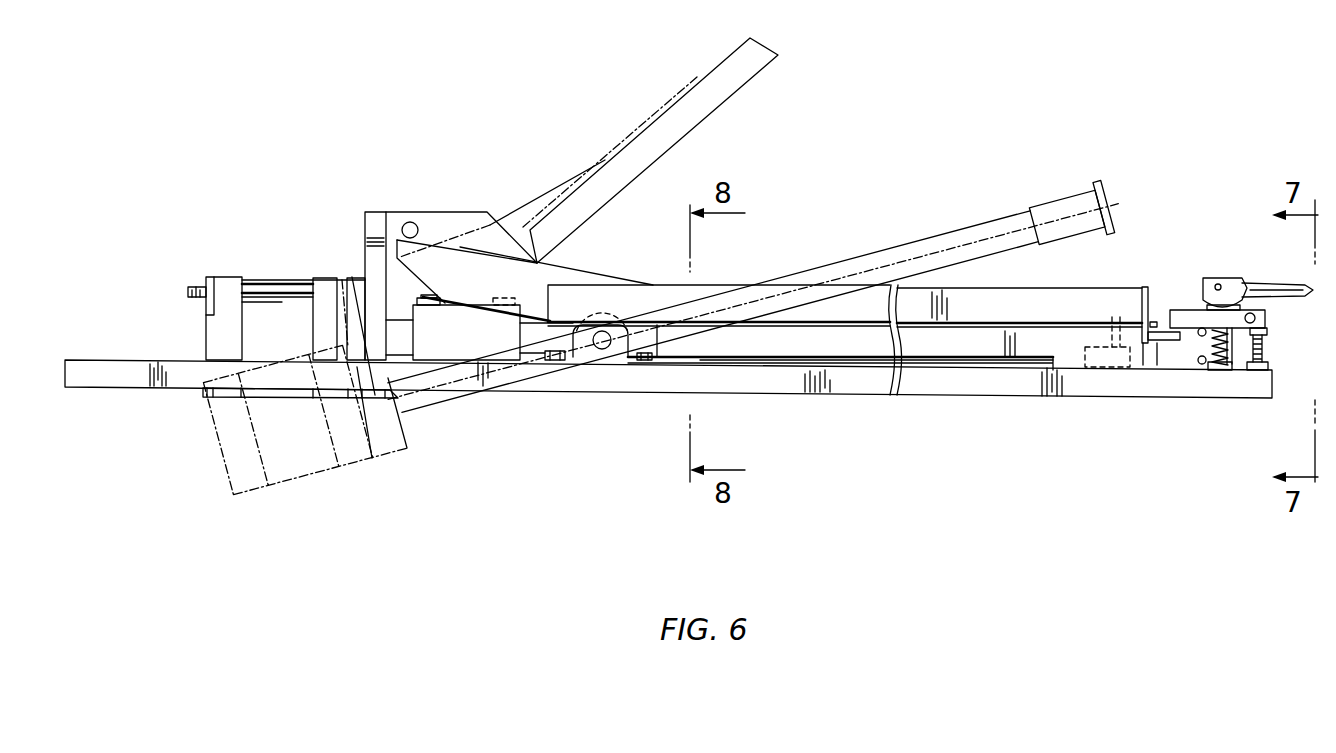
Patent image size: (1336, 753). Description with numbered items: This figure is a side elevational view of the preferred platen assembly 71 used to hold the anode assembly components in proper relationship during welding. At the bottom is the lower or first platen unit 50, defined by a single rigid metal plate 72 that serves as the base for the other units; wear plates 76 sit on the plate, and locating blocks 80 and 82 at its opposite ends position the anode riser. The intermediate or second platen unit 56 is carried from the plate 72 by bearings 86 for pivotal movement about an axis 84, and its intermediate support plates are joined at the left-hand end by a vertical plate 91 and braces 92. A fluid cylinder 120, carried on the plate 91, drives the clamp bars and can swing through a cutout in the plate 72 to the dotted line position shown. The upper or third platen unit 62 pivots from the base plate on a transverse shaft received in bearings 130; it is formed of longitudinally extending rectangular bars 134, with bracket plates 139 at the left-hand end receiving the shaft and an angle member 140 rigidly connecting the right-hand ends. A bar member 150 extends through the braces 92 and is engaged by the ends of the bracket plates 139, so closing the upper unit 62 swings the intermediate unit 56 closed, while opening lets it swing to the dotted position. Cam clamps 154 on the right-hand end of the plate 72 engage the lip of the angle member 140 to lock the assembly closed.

The lower or first platen unit 50 is at (1240, 404).
The intermediate or second platen unit 56 is at (1274, 348).
The upper or third platen unit 62 is at (681, 137).
The platen assembly 71 is at (296, 164).
The plate 72 is at (1020, 388).
The wear plate 76 is at (849, 366).
The locating block 80 is at (1102, 366).
The locating block 82 is at (671, 364).
The axis 84 is at (603, 347).
The bearings 86 is at (578, 358).
The vertical plate 91 is at (365, 251).
The braces 92 is at (446, 218).
The fluid cylinder 120 is at (205, 328).
The bearings 130 is at (475, 313).
The rectangular bars 134 is at (1031, 302).
The bracket plates 139 is at (566, 279).
The angle member 140 is at (1148, 304).
The bar member 150 is at (430, 210).
The cam clamps 154 is at (1242, 273).